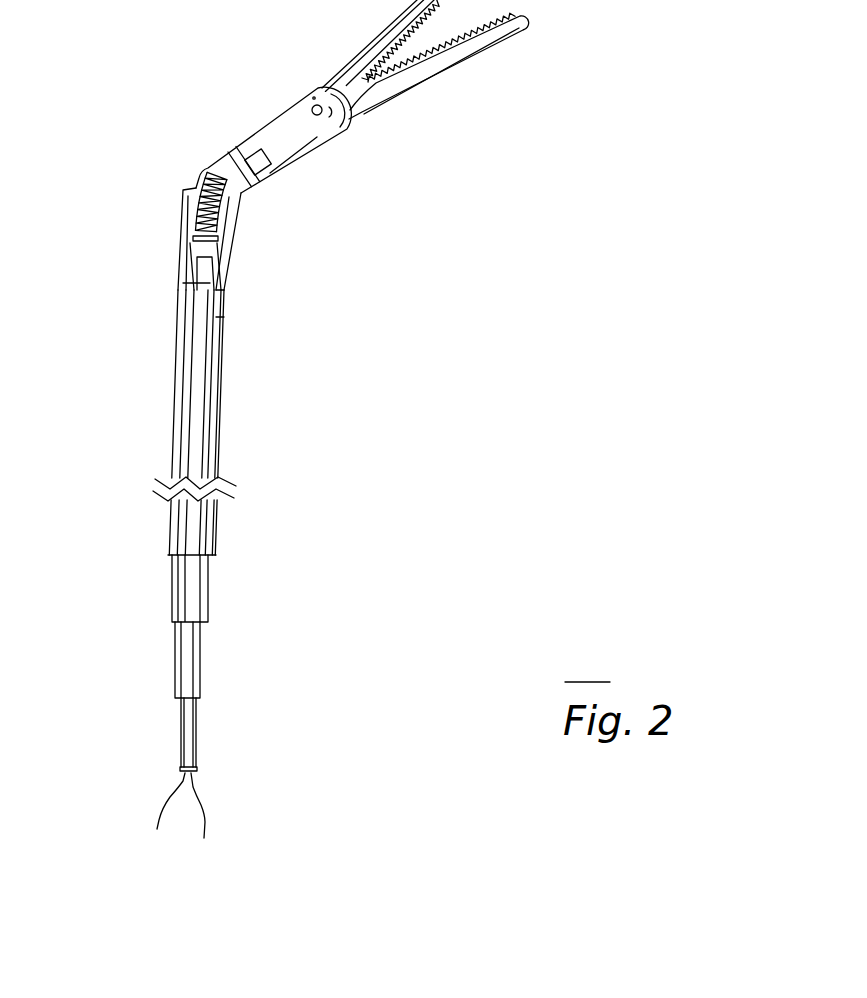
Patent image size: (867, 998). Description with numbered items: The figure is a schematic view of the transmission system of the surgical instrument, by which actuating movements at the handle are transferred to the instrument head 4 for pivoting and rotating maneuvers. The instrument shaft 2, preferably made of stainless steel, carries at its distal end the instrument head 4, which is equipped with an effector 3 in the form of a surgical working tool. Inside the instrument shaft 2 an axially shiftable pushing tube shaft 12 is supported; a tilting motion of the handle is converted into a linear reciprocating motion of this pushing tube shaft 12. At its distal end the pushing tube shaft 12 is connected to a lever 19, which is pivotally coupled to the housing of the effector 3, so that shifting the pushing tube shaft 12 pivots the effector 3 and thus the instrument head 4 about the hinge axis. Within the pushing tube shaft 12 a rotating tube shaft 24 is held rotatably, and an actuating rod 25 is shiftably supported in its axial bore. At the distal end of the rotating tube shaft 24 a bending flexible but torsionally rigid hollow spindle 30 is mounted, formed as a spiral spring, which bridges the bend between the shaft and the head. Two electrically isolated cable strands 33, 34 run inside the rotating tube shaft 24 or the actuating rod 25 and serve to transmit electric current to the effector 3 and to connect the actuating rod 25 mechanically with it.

The instrument shaft 2 is at (222, 447).
The effector 3 is at (350, 128).
The instrument head 4 is at (267, 140).
The pushing tube shaft 12 is at (201, 584).
The lever 19 is at (237, 235).
The rotating tube shaft 24 is at (199, 657).
The actuating rod 25 is at (197, 735).
The hollow spindle 30 is at (182, 178).
The cable strand 33 is at (210, 818).
The cable strand 34 is at (153, 815).